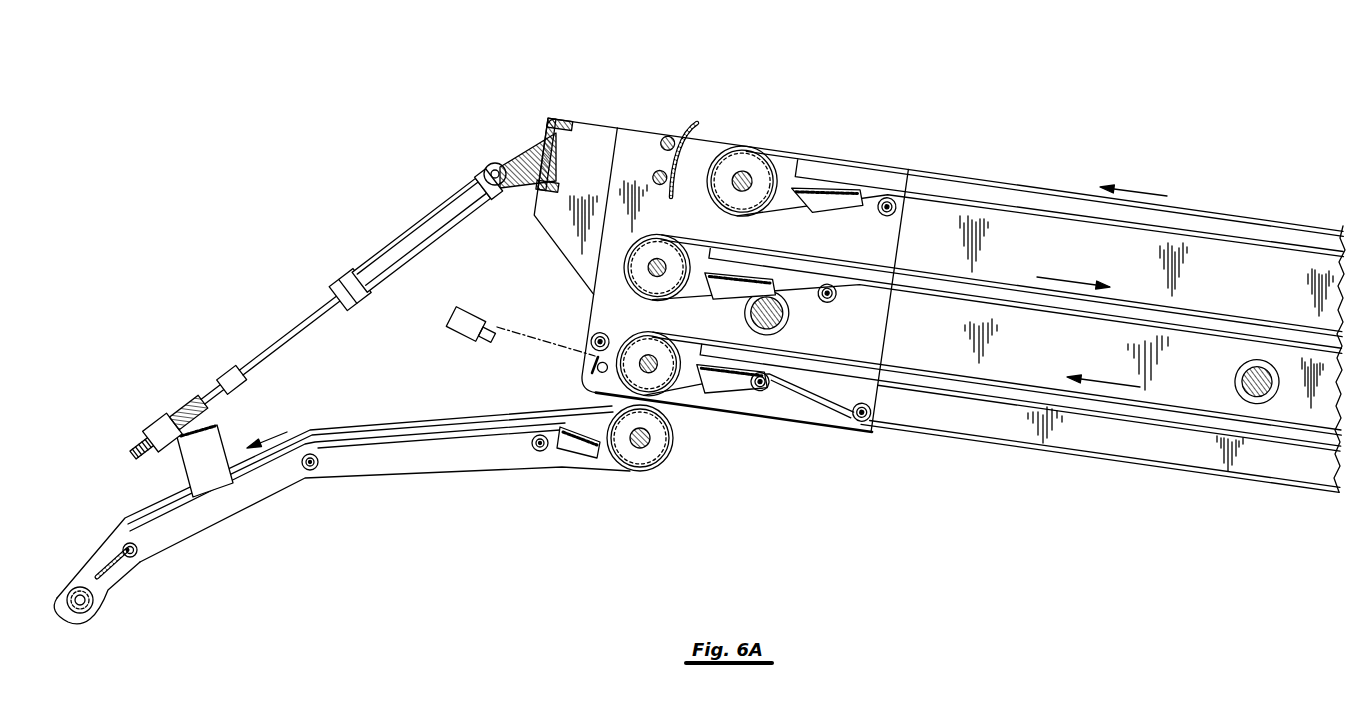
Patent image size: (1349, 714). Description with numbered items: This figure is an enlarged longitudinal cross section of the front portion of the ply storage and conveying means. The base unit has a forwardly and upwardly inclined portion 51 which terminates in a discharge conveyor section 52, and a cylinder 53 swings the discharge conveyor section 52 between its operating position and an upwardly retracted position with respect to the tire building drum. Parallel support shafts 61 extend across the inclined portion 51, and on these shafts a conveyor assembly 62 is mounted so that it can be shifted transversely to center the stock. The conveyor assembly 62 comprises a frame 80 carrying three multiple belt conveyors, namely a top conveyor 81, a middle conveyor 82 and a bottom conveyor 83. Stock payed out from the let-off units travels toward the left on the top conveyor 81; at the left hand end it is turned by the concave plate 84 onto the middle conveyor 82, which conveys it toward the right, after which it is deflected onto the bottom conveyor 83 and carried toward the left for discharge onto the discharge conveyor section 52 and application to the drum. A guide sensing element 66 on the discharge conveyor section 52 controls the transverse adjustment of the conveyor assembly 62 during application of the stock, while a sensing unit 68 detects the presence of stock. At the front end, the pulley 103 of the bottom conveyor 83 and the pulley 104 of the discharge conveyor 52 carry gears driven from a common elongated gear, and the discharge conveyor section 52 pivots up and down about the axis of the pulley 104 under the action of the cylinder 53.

The forwardly and upwardly inclined portion 51 is at (589, 123).
The discharge conveyor section 52 is at (400, 422).
The cylinder 53 is at (417, 217).
The support shaft 61 is at (787, 312).
The conveyor assembly 62 is at (1228, 210).
The guide sensing element 66 is at (493, 314).
The sensing unit 68 is at (486, 338).
The frame 80 is at (868, 376).
The top conveyor 81 is at (989, 180).
The middle conveyor 82 is at (1000, 284).
The bottom conveyor 83 is at (1012, 382).
The concave plate 84 is at (694, 121).
The pulley 103 is at (635, 347).
The pulley 104 is at (658, 452).